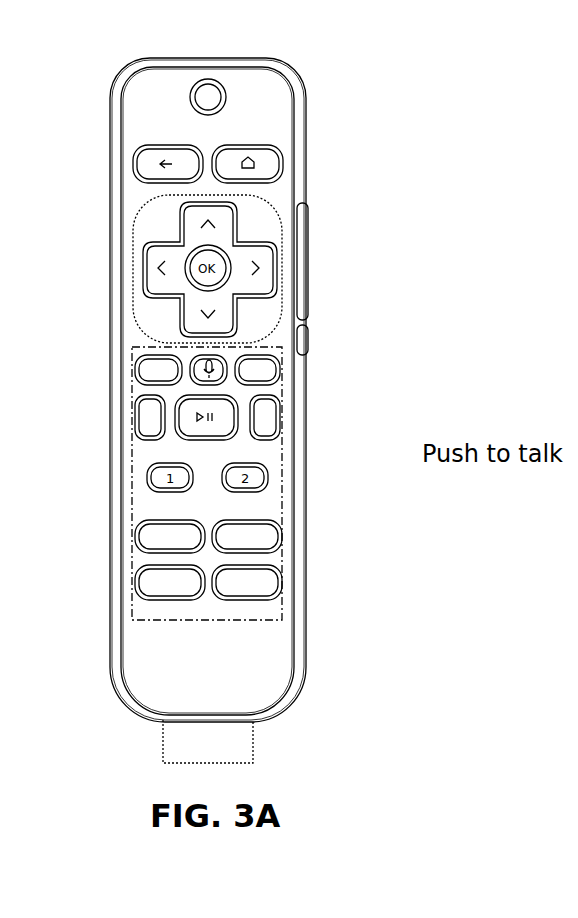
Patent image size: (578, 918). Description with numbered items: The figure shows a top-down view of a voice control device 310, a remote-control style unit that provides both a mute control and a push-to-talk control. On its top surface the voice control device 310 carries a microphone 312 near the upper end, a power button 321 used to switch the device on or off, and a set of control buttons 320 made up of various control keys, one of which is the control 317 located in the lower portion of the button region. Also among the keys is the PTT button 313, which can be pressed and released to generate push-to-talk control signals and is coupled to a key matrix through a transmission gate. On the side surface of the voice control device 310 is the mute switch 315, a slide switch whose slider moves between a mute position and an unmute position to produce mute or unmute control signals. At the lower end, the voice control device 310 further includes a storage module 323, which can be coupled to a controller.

The voice control device 310 is at (195, 68).
The microphone 312 is at (204, 132).
The PTT button 313 is at (212, 372).
The mute switch 315 is at (308, 250).
The control 317 is at (150, 540).
The set of control buttons 320 is at (282, 620).
The power button 321 is at (213, 95).
The storage module 323 is at (230, 738).